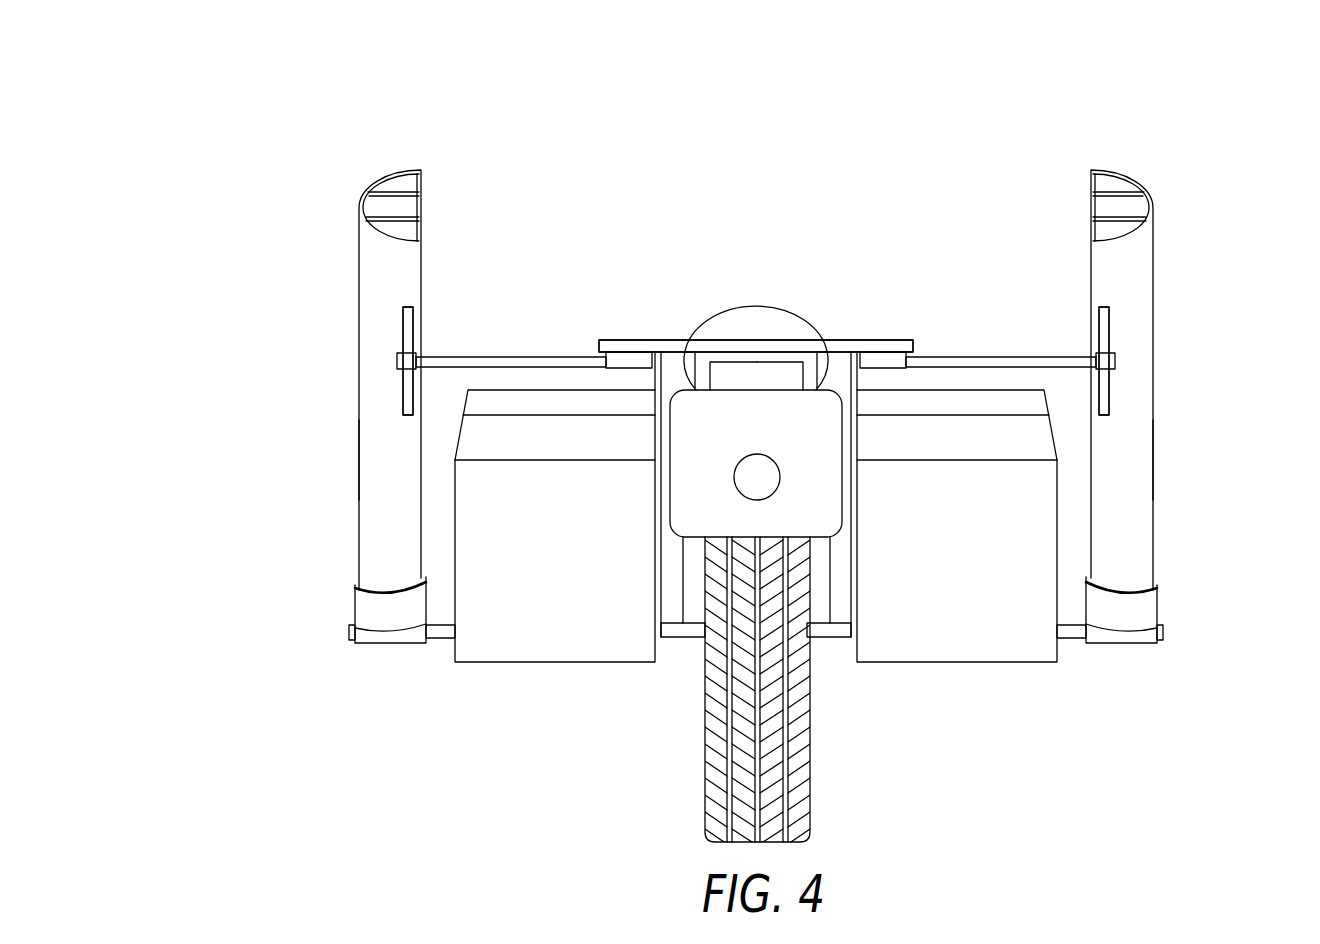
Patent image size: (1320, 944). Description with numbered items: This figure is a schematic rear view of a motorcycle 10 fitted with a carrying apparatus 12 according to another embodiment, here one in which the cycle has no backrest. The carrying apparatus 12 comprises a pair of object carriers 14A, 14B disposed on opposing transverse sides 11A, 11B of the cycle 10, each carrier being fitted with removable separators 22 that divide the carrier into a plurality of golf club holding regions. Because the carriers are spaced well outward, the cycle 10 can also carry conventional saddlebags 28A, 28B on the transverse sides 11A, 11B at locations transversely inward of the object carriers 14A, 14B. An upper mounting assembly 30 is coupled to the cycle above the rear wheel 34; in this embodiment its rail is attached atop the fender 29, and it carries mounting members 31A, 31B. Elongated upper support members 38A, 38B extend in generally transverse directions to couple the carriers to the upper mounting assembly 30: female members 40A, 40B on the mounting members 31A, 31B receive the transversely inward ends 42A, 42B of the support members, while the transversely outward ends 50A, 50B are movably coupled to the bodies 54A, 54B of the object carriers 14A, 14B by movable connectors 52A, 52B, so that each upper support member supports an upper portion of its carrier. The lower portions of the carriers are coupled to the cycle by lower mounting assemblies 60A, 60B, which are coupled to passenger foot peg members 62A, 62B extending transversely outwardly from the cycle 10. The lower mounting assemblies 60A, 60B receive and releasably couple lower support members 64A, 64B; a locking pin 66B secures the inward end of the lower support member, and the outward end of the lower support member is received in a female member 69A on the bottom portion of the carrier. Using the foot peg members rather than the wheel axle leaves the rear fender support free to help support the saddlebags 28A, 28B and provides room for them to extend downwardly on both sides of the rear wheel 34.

The motorcycle 10 is at (603, 56).
The transverse side 11A is at (273, 454).
The transverse side 11B is at (1273, 450).
The carrying apparatus 12 is at (276, 216).
The object carrier 14A is at (377, 286).
The object carrier 14B is at (1135, 286).
The removable separator 22 is at (402, 185).
The saddlebag 28A is at (585, 578).
The saddlebag 28B is at (977, 578).
The fender 29 is at (702, 482).
The upper mounting assembly 30 is at (751, 320).
The mounting member 31A is at (623, 342).
The mounting member 31B is at (889, 342).
The rear wheel 34 is at (812, 812).
The upper support member 38A is at (512, 357).
The upper support member 38B is at (1000, 357).
The female member 40A is at (693, 330).
The female member 40B is at (819, 330).
The transversely inward end 42A is at (627, 362).
The transversely inward end 42B is at (885, 362).
The transversely outward end 50A is at (433, 352).
The transversely outward end 50B is at (1079, 352).
The movable connector 52A is at (386, 333).
The movable connector 52B is at (1126, 333).
The body 54A is at (415, 475).
The body 54B is at (1147, 475).
The lower mounting assembly 60A is at (383, 675).
The lower mounting assembly 60B is at (1125, 675).
The passenger foot peg member 62A is at (690, 640).
The passenger foot peg member 62B is at (822, 640).
The lower support member 64A is at (440, 642).
The lower support member 64B is at (1075, 642).
The pin 66B is at (1136, 638).
The female member 69A is at (378, 638).